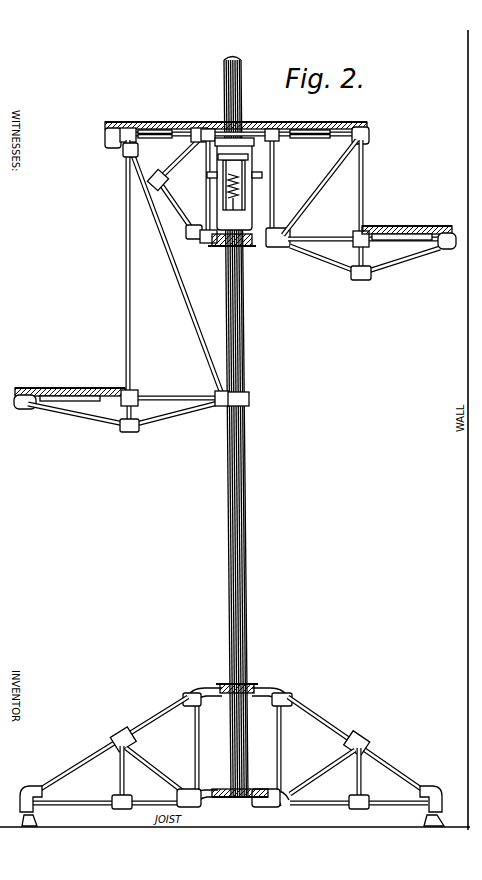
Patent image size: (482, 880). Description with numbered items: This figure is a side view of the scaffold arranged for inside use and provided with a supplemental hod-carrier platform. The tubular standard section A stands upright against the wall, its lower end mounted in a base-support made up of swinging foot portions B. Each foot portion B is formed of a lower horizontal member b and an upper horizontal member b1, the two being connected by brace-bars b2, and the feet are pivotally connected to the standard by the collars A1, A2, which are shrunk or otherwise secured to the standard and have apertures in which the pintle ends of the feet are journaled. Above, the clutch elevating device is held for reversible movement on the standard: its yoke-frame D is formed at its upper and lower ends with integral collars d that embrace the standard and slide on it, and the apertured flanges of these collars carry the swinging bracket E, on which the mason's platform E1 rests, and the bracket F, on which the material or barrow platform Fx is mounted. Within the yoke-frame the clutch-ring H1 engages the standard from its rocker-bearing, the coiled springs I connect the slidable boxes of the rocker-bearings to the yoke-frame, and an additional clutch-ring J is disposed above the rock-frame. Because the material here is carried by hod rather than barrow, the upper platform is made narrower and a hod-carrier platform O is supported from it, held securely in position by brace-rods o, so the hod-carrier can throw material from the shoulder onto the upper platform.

The standard section A is at (241, 427).
The collar A1 is at (242, 677).
The collar A2 is at (249, 788).
The swinging foot portion B is at (235, 747).
The lower horizontal member b is at (325, 803).
The upper horizontal member b1 is at (230, 746).
The brace-bar b2 is at (240, 771).
The yoke-frame D is at (217, 200).
The collar d is at (246, 129).
The swinging bracket E is at (362, 210).
The mason's platform E1 is at (401, 234).
The bracket F is at (178, 184).
The barrow platform Fx is at (237, 122).
The clutch-ring H1 is at (214, 248).
The coiled spring I is at (240, 197).
The additional clutch-ring J is at (244, 165).
The hod-carrier platform O is at (69, 391).
The brace-rod o is at (138, 420).